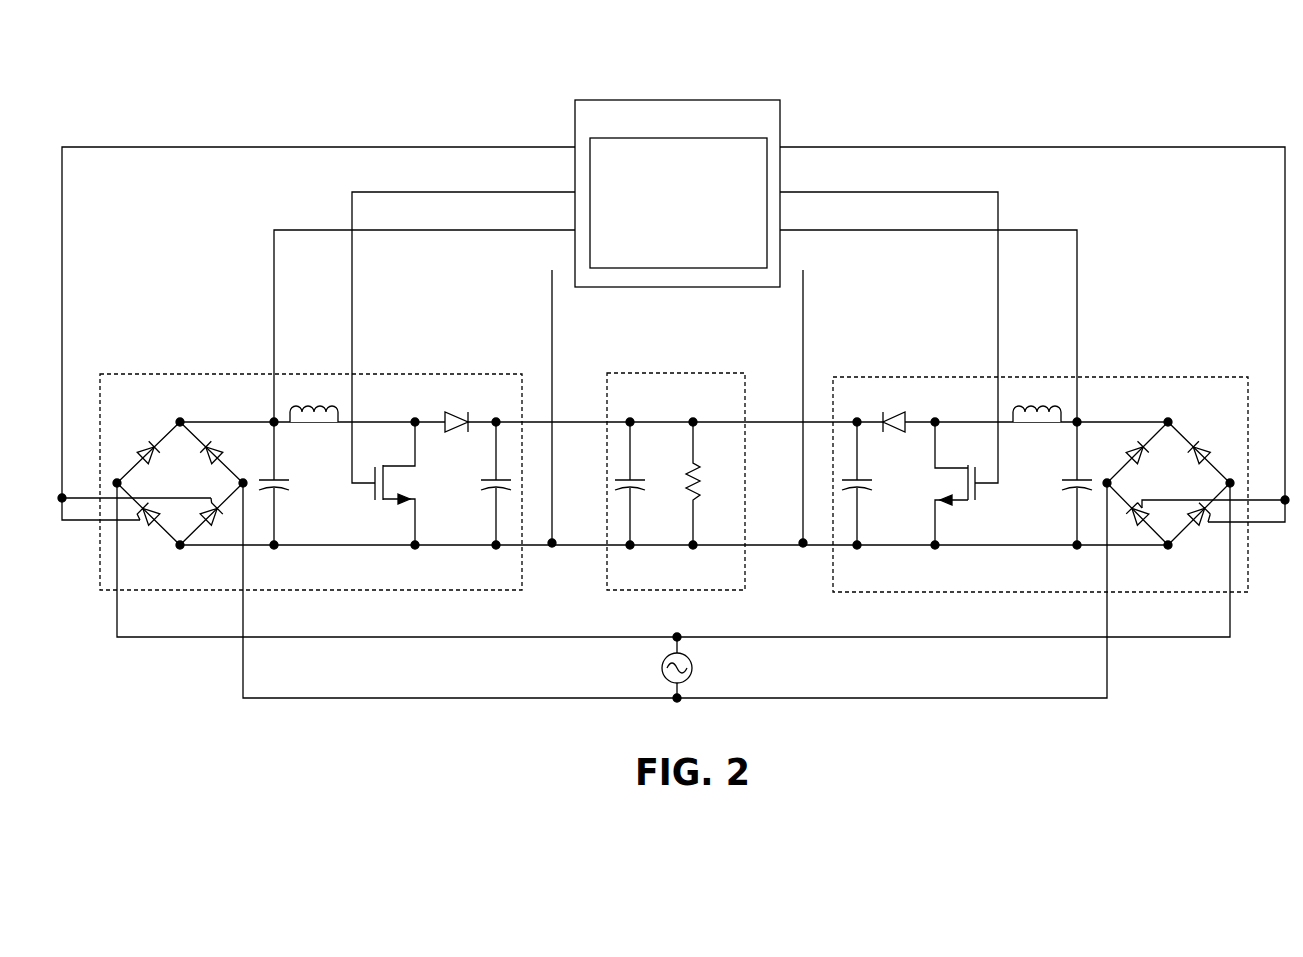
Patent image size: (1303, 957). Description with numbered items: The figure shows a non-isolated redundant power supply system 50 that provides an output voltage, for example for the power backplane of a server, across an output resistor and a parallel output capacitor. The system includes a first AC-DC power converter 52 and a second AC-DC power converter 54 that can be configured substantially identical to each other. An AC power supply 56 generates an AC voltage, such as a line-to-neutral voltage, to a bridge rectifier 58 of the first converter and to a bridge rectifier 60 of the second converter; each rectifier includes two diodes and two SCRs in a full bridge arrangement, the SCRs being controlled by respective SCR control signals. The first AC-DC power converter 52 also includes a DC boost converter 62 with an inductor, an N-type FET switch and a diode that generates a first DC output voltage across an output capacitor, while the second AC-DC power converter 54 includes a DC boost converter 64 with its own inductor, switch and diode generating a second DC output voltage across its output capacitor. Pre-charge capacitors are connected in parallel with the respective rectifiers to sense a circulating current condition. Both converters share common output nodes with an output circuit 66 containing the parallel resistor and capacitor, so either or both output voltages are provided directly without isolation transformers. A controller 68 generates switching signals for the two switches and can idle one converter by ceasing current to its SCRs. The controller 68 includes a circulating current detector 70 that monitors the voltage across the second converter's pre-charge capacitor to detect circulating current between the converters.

The redundant power supply system 50 is at (140, 82).
The first AC-DC power converter 52 is at (212, 373).
The second AC-DC power converter 54 is at (1138, 377).
The AC power supply 56 is at (692, 670).
The bridge rectifier 58 is at (163, 418).
The bridge rectifier 60 is at (1177, 419).
The DC boost converter 62 is at (395, 406).
The DC boost converter 64 is at (949, 406).
The output circuit 66 is at (627, 590).
The controller 68 is at (766, 100).
The circulating current detector 70 is at (702, 268).